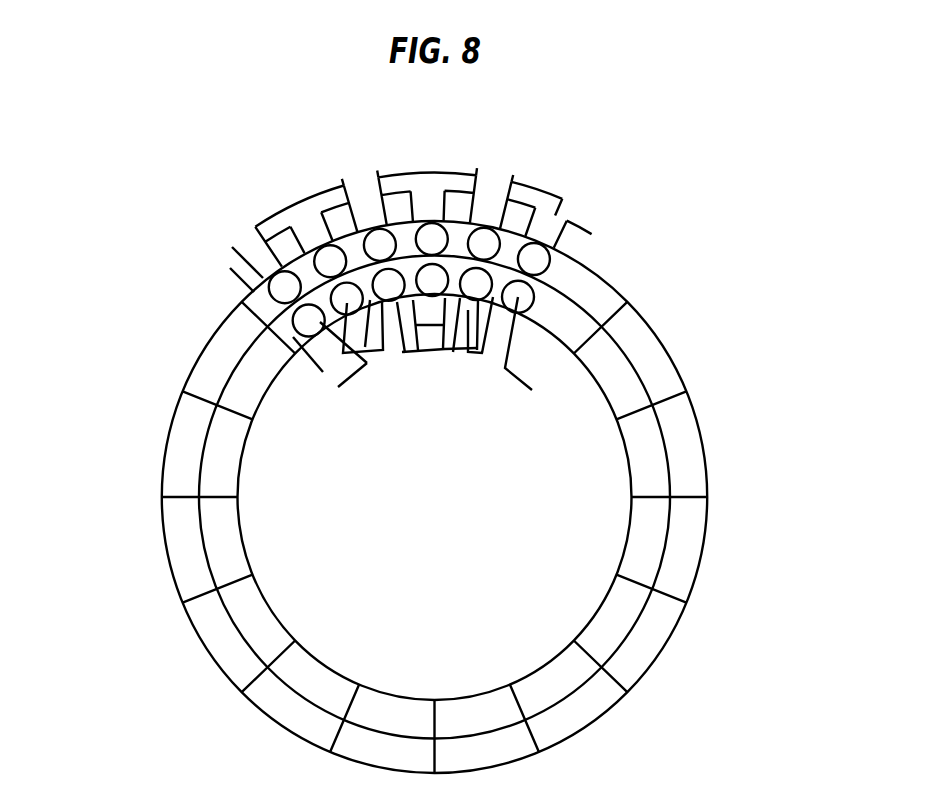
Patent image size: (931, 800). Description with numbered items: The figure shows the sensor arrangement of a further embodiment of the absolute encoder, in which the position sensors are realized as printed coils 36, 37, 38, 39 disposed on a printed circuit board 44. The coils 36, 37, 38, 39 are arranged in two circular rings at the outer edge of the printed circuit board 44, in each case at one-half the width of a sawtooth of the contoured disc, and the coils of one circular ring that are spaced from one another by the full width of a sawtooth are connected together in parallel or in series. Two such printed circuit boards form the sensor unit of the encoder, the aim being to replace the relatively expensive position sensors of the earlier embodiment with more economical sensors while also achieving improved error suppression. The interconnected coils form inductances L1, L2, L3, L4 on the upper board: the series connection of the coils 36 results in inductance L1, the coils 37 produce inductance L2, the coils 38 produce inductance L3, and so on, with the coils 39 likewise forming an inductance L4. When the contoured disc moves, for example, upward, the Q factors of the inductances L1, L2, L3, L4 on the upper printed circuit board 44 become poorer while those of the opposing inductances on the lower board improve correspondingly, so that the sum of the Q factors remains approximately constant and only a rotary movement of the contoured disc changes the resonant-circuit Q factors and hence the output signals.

The printed coil 36 is at (534, 258).
The printed coil 37 is at (484, 242).
The printed coil 38 is at (525, 304).
The printed coil 39 is at (476, 286).
The printed circuit board 44 is at (565, 525).
The inductance L1 is at (232, 247).
The inductance L2 is at (230, 268).
The inductance L3 is at (323, 372).
The inductance L4 is at (338, 387).